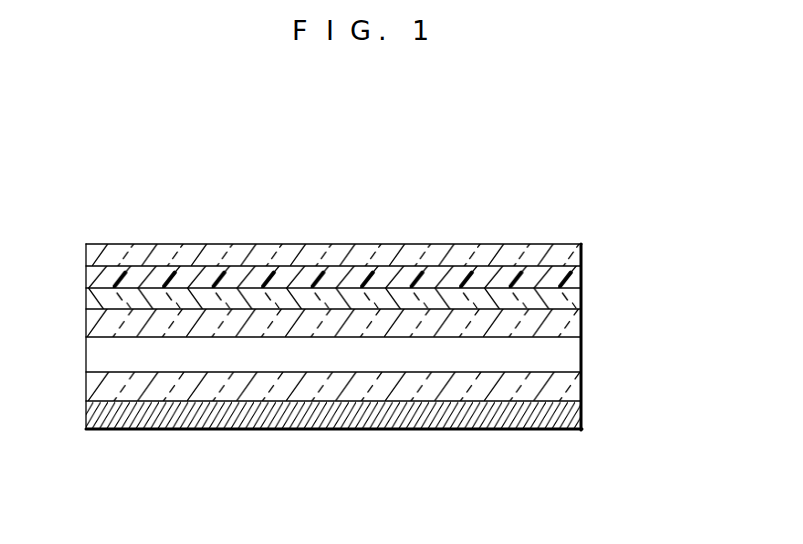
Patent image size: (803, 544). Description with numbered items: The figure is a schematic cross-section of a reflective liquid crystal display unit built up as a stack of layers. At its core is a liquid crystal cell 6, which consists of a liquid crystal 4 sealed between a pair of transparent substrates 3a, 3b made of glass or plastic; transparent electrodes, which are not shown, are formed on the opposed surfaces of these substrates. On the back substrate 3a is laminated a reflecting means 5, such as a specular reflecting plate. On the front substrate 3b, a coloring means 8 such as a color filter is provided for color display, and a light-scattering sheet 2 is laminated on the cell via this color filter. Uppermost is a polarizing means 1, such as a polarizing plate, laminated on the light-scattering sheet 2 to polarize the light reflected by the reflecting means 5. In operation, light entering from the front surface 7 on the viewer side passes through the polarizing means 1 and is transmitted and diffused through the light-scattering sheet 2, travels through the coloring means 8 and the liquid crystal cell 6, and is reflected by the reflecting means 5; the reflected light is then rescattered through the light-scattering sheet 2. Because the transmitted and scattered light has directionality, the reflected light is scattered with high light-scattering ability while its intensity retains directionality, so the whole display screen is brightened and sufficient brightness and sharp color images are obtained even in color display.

The polarizing means 1 is at (565, 255).
The light-scattering sheet 2 is at (508, 275).
The transparent substrate 3a is at (381, 379).
The transparent substrate 3b is at (570, 322).
The liquid crystal 4 is at (565, 352).
The reflecting means 5 is at (332, 431).
The liquid crystal cell 6 is at (401, 346).
The front surface 7 is at (260, 243).
The coloring means 8 is at (453, 297).